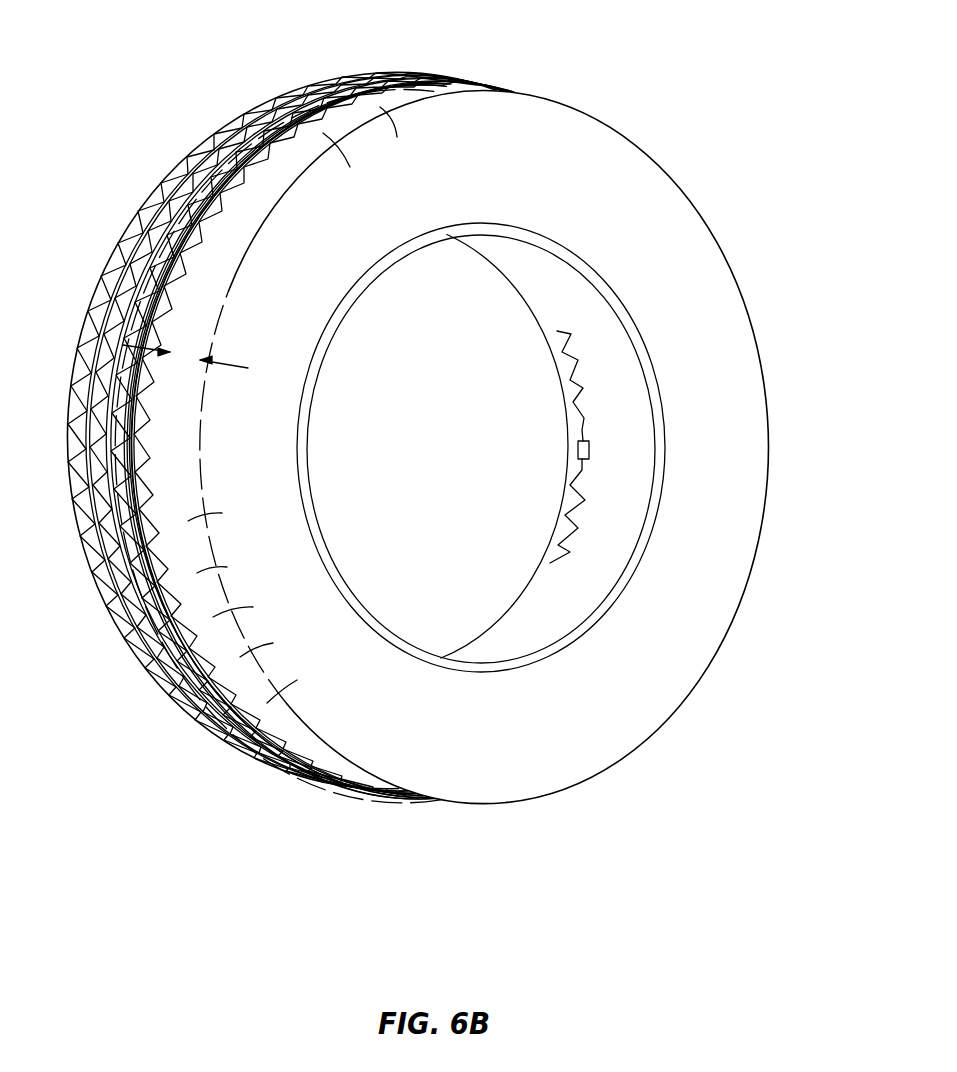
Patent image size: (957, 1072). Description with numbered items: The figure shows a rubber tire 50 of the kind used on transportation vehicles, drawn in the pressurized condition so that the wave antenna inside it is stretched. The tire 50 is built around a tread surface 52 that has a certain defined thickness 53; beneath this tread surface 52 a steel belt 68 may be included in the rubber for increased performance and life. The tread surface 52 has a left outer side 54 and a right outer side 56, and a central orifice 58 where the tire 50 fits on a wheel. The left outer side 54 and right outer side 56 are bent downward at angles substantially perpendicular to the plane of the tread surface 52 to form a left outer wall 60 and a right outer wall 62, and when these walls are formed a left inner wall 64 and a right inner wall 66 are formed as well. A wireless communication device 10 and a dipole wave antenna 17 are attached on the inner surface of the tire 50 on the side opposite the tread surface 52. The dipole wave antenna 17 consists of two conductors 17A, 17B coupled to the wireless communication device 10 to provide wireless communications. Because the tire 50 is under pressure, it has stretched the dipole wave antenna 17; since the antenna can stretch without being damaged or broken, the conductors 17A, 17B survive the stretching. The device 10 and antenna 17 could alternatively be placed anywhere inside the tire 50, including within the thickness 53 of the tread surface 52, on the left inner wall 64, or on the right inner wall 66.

The wireless communication device 10 is at (590, 450).
The dipole wave antenna 17 is at (598, 462).
The conductor 17A is at (583, 373).
The conductor 17B is at (580, 518).
The tire 50 is at (538, 86).
The tread surface 52 is at (280, 97).
The thickness 53 is at (313, 143).
The left outer side 54 is at (517, 253).
The right outer side 56 is at (405, 810).
The orifice 58 is at (395, 467).
The left outer wall 60 is at (520, 297).
The right outer wall 62 is at (500, 740).
The left inner wall 64 is at (587, 307).
The right inner wall 66 is at (183, 362).
The steel belt 68 is at (222, 252).